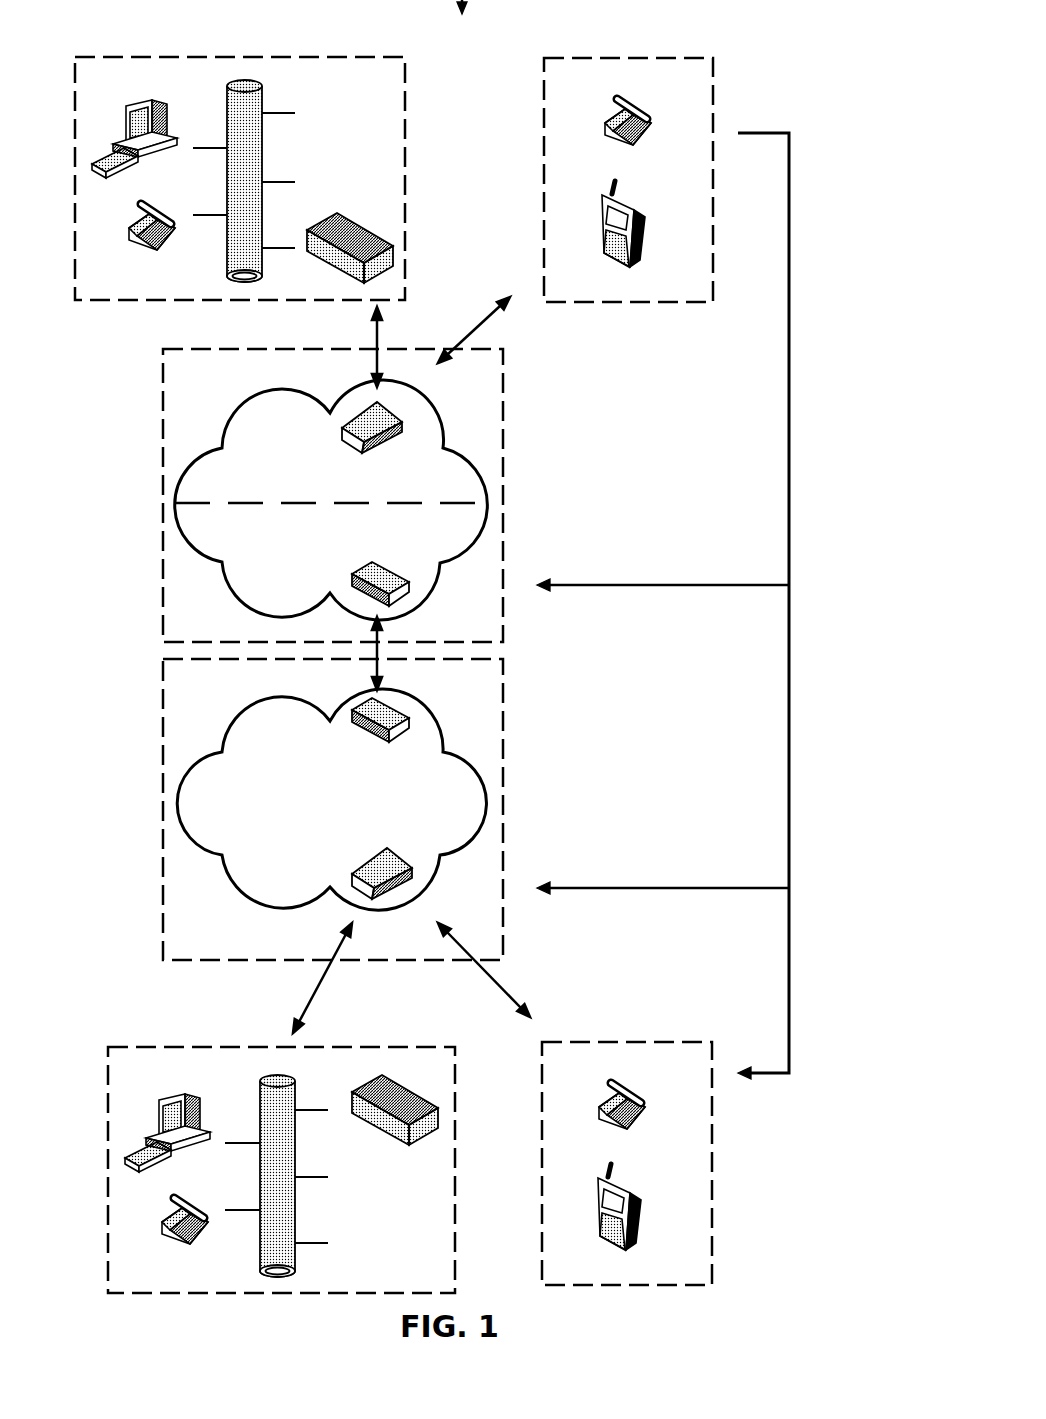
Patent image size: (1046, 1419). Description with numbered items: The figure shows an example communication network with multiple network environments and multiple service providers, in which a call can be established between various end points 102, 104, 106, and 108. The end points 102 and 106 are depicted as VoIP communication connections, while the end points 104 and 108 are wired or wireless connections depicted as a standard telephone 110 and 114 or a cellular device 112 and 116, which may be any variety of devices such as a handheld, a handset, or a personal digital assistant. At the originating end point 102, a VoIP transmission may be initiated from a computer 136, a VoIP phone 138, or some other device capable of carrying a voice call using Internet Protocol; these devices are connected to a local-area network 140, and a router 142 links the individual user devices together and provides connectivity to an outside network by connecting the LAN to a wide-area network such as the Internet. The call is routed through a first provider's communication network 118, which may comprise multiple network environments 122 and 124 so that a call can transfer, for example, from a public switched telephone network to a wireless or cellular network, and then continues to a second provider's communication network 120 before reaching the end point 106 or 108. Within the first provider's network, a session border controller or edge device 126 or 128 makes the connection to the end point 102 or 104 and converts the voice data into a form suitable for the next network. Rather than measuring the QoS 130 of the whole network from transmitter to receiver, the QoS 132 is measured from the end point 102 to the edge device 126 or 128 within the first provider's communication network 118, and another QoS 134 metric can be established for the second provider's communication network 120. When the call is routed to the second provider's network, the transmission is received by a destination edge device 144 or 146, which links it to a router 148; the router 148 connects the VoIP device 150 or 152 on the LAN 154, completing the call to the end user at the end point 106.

The end point 102 is at (248, 155).
The end point 104 is at (605, 152).
The end point 106 is at (252, 1141).
The end point 108 is at (607, 1136).
The standard telephone 110 is at (574, 122).
The cellular device 112 is at (571, 223).
The standard telephone 114 is at (574, 1103).
The cellular device 116 is at (572, 1207).
The first provider's communication network 118 is at (333, 495).
The second provider's communication network 120 is at (333, 809).
The network environment 122 is at (281, 456).
The network environment 124 is at (286, 571).
The edge device 126 is at (408, 419).
The edge device 128 is at (415, 584).
The QoS 130 is at (809, 606).
The QoS 132 is at (708, 505).
The QoS metric 134 is at (708, 831).
The computer 136 is at (103, 139).
The VoIP phone 138 is at (102, 229).
The local-area network 140 is at (263, 172).
The router 142 is at (386, 246).
The edge device 144 is at (414, 720).
The edge device 146 is at (419, 873).
The router 148 is at (400, 1126).
The VoIP device 150 is at (130, 1133).
The VoIP device 152 is at (129, 1221).
The LAN 154 is at (297, 1183).